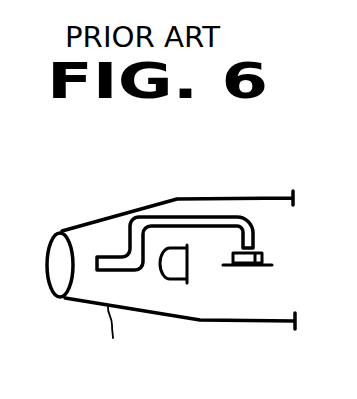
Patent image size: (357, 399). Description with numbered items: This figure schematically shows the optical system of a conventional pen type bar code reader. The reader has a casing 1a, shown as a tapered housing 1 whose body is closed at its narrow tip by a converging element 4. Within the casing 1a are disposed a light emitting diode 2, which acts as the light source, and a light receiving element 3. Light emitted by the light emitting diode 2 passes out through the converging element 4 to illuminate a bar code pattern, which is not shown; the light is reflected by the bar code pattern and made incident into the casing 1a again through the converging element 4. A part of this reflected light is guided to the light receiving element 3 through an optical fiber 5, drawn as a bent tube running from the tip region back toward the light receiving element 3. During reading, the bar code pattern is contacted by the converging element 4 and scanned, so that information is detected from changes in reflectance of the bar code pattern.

The housing 1 is at (92, 220).
The casing 1a is at (115, 340).
The light emitting diode 2 is at (173, 282).
The light receiving element 3 is at (253, 266).
The converging element 4 is at (63, 293).
The optical fiber 5 is at (195, 214).